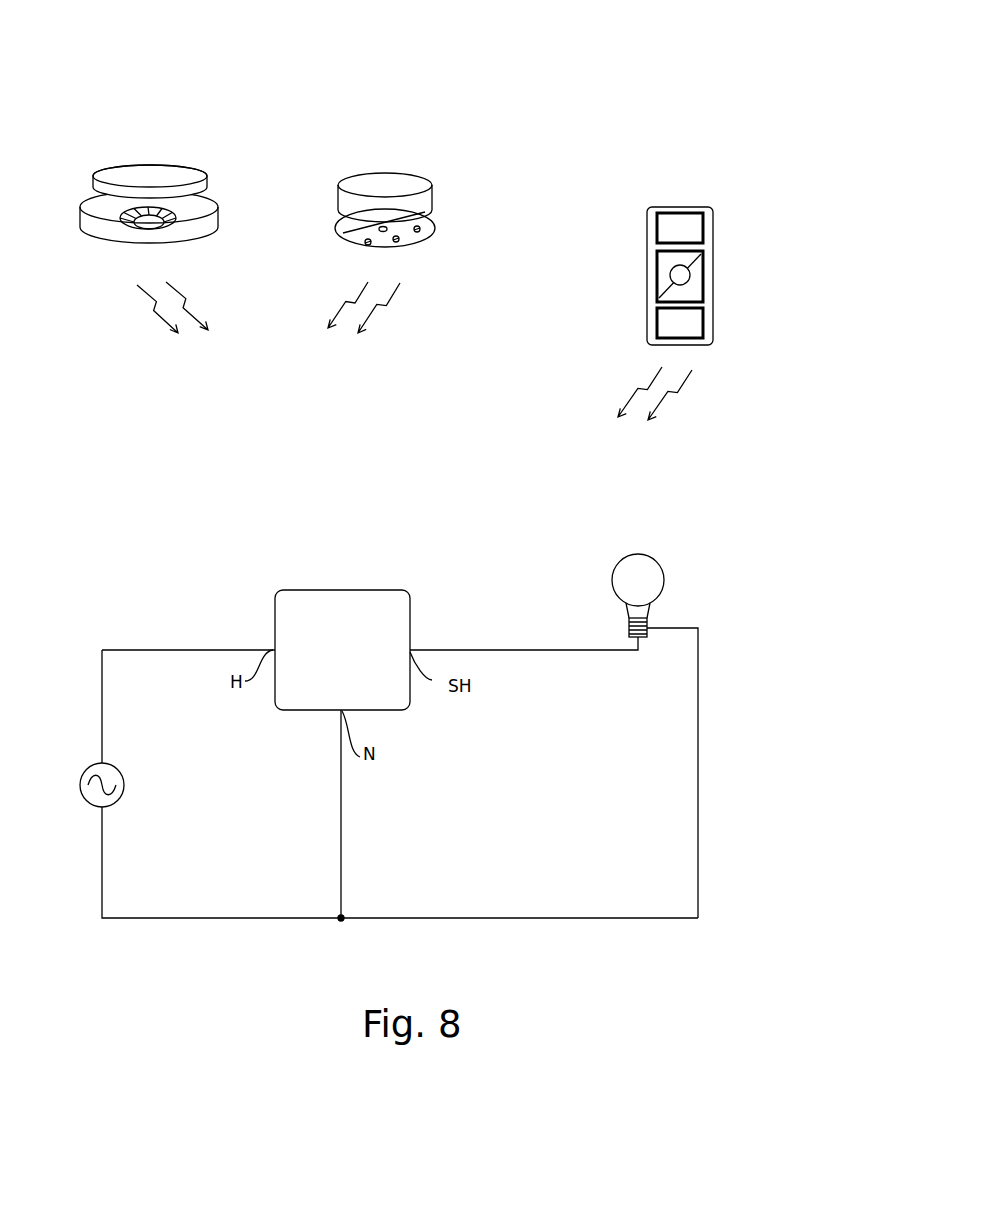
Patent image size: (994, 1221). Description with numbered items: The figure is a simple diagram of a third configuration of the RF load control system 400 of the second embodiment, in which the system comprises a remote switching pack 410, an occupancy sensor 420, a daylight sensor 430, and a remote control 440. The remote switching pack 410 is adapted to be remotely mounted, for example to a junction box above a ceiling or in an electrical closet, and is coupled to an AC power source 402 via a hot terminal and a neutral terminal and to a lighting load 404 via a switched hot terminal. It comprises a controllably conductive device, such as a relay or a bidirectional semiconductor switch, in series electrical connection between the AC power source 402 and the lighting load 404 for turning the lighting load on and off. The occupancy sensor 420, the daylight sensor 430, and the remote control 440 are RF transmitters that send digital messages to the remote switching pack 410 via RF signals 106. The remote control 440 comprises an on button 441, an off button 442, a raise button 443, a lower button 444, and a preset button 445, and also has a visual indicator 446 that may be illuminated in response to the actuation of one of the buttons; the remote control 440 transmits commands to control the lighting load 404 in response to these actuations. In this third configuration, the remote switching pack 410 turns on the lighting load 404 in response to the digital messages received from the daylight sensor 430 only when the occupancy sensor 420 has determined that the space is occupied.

The RF load control system 400 is at (502, 88).
The occupancy sensor 420 is at (157, 170).
The daylight sensor 430 is at (372, 182).
The remote control 440 is at (687, 103).
The on button 441 is at (683, 220).
The off button 442 is at (688, 323).
The raise button 443 is at (667, 262).
The lower button 444 is at (690, 288).
The preset button 445 is at (680, 275).
The visual indicator 446 is at (642, 222).
The RF signals 106 is at (422, 322).
The remote switching pack 410 is at (325, 606).
The AC power source 402 is at (113, 762).
The lighting load 404 is at (630, 573).